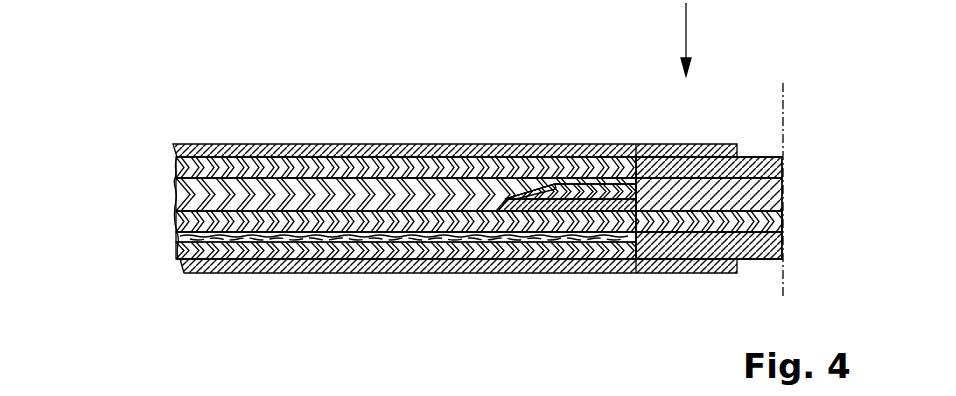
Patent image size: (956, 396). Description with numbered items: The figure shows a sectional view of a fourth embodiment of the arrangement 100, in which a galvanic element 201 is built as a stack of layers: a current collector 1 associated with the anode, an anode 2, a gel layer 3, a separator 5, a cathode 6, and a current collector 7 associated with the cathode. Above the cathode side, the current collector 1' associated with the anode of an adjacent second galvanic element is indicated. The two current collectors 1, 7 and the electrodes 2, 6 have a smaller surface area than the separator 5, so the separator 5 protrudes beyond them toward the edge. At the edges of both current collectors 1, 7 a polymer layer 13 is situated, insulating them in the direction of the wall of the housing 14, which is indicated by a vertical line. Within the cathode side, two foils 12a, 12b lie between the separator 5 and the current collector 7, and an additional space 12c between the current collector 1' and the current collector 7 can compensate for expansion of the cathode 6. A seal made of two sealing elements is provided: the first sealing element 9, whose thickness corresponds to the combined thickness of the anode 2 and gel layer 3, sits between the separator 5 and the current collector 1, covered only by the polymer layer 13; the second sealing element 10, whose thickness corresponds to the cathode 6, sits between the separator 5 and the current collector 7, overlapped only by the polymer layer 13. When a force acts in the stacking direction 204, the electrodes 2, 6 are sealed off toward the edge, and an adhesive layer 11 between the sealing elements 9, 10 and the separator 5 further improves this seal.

The arrangement 100 is at (305, 101).
The current collector associated with the anode of a second galvanic element 1' is at (455, 119).
The current collector associated with the anode 1 is at (458, 295).
The galvanic element 201 is at (112, 158).
The current collector associated with the cathode 7 is at (183, 172).
The cathode 6 is at (188, 192).
The separator 5 is at (182, 220).
The gel layer 3 is at (180, 237).
The anode 2 is at (188, 253).
The foil 12a is at (583, 186).
The foil 12b is at (607, 196).
The additional space 12c is at (525, 192).
The polymer layer 13 is at (749, 158).
The second sealing element 10 is at (783, 188).
The adhesive layer 11 is at (783, 209).
The first sealing element 9 is at (783, 250).
The housing 14 is at (785, 105).
The stacking direction 204 is at (688, 28).